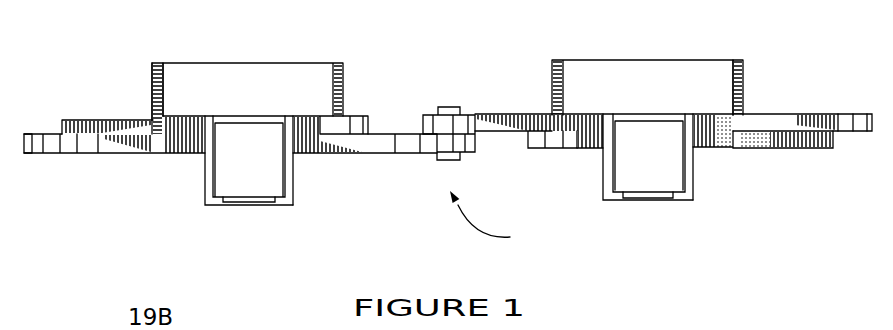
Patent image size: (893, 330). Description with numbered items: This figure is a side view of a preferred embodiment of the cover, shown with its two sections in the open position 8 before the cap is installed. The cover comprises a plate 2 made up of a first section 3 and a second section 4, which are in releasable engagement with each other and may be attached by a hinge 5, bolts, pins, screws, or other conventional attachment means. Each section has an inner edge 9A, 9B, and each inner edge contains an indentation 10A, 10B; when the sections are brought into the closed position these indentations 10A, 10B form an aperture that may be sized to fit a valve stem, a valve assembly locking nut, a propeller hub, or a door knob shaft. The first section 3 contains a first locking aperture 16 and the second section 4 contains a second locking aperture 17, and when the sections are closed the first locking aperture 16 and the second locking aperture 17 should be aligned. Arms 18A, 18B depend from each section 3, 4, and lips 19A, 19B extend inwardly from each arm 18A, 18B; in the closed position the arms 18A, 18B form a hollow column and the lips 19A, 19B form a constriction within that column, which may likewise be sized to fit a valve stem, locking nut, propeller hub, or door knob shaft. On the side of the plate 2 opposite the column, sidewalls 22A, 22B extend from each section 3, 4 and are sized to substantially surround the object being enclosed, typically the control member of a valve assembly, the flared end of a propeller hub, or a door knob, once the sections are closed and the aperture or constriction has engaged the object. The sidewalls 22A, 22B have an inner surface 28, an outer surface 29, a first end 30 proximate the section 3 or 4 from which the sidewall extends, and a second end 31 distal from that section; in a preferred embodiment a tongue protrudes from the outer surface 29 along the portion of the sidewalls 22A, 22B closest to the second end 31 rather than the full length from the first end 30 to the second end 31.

The plate 2 is at (378, 142).
The first section 3 is at (767, 115).
The second section 4 is at (110, 128).
The hinge 5 is at (447, 107).
The open position 8 is at (489, 219).
The inner edge 9A is at (713, 147).
The inner edge 9B is at (188, 145).
The indentation 10A is at (643, 145).
The indentation 10B is at (253, 167).
The first locking aperture 16 is at (808, 118).
The second locking aperture 17 is at (90, 145).
The arm 18A is at (692, 190).
The arm 18B is at (290, 188).
The lip 19A is at (610, 197).
The lip 19B is at (208, 193).
The sidewall 22A is at (552, 72).
The sidewall 22B is at (343, 72).
The inner surface 28 is at (163, 97).
The outer surface 29 is at (152, 80).
The first end 30 is at (733, 103).
The second end 31 is at (733, 72).